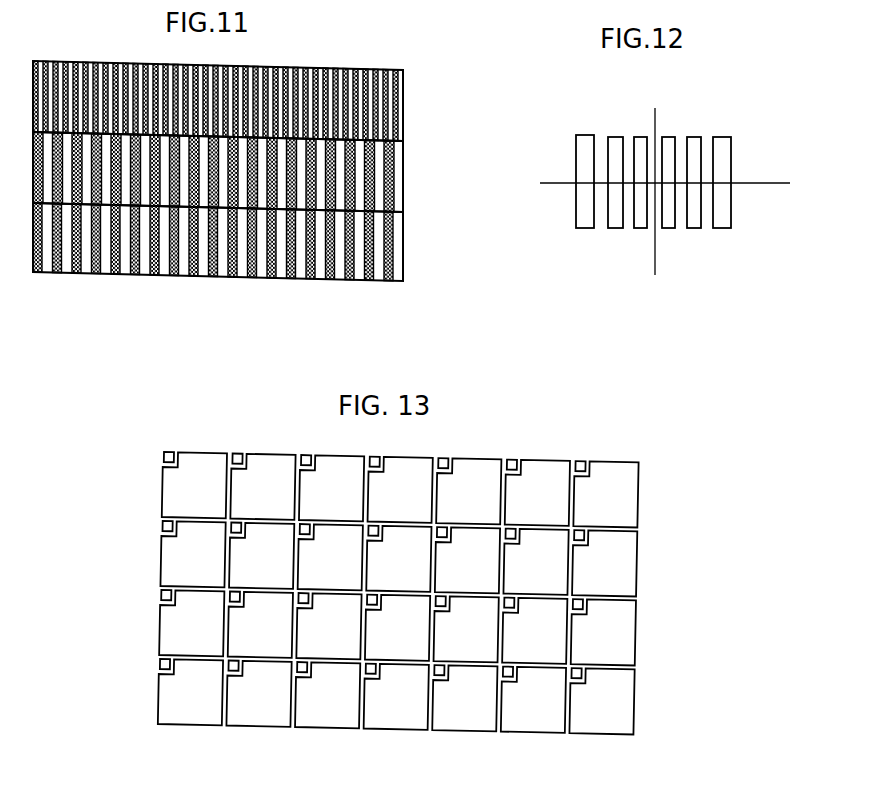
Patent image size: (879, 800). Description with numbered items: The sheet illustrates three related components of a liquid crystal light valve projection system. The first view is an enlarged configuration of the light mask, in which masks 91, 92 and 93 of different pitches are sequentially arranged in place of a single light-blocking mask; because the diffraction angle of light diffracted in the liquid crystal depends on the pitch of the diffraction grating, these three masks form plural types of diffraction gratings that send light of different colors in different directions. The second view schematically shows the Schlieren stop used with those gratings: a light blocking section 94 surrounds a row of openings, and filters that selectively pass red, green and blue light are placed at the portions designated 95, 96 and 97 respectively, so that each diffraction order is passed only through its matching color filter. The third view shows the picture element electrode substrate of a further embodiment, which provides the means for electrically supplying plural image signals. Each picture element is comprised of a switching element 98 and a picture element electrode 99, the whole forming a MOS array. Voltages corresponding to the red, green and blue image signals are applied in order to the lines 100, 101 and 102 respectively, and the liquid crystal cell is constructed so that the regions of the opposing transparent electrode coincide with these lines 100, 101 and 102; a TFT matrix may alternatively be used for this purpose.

In FIG. 11, the mask 91 is at (412, 75).
In FIG. 11, the mask 92 is at (412, 147).
In FIG. 11, the mask 93 is at (412, 217).
In FIG. 12, the light blocking section 94 is at (737, 210).
In FIG. 12, the filter portion for red 95 is at (638, 137).
In FIG. 12, the filter portion for green 96 is at (613, 228).
In FIG. 12, the filter portion for blue 97 is at (587, 136).
In FIG. 13, the switching element 98 is at (165, 450).
In FIG. 13, the picture element electrode 99 is at (212, 458).
In FIG. 13, the line 100 is at (434, 464).
In FIG. 13, the line 101 is at (650, 537).
In FIG. 13, the line 102 is at (650, 603).